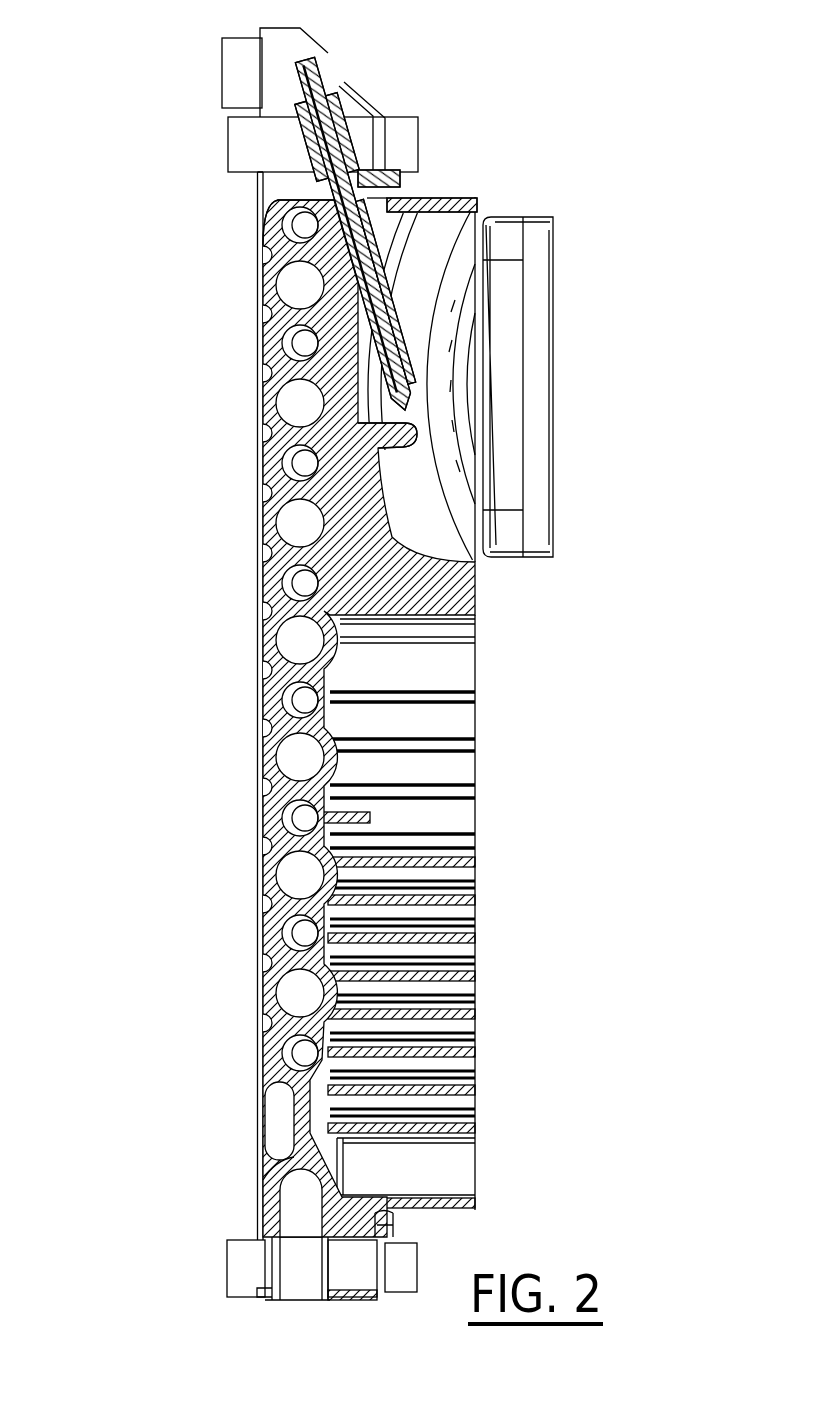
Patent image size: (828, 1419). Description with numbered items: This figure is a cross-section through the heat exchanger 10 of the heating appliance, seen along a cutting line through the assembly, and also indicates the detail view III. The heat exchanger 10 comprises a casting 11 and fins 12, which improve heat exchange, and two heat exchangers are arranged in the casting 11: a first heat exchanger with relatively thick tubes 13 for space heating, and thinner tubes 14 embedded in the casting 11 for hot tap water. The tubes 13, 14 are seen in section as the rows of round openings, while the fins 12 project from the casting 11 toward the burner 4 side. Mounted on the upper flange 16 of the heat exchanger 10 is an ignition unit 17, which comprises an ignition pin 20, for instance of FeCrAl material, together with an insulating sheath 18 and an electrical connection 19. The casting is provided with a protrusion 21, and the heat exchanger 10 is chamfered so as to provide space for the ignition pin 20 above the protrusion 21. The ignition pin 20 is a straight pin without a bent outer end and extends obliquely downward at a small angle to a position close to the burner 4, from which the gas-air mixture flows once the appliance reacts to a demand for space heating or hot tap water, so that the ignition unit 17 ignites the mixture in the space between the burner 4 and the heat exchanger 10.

The burner 4 is at (533, 523).
The heat exchanger 10 is at (212, 528).
The casting 11 is at (277, 478).
The fins 12 is at (353, 696).
The thick tubes 13 is at (298, 403).
The thinner tubes 14 is at (296, 583).
The upper flange 16 is at (303, 200).
The ignition unit 17 is at (408, 212).
The insulating sheath 18 is at (362, 193).
The electrical connection 19 is at (310, 80).
The ignition pin 20 is at (397, 352).
The protrusion 21 is at (393, 443).
The section view indicator III is at (488, 244).